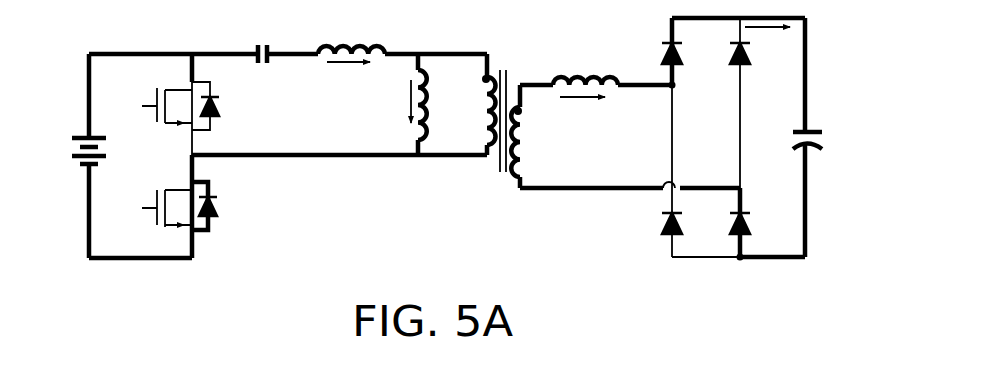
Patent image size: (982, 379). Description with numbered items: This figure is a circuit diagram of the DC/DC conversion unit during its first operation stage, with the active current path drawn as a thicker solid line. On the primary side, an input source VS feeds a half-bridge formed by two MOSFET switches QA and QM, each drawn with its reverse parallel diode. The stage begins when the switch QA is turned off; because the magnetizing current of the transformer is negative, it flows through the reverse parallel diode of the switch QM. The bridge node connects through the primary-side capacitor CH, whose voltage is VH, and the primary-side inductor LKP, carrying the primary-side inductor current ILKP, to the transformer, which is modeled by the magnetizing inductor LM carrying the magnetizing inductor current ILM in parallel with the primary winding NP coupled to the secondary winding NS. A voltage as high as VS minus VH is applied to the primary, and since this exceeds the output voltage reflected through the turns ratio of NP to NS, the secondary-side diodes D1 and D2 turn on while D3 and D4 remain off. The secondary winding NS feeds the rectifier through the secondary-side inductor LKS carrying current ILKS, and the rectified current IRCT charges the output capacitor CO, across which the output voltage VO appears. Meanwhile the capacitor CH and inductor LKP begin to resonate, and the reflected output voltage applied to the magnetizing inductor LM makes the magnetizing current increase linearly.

The input voltage VS is at (72, 152).
The switch QA is at (168, 100).
The switch QM is at (167, 200).
The primary-side capacitor CH is at (260, 35).
The voltage across primary-side capacitor VH is at (258, 81).
The primary-side inductor LKP is at (351, 30).
The primary-side inductor current ILKP is at (352, 80).
The magnetizing inductor current ILM is at (389, 105).
The magnetizing inductor LM is at (440, 105).
The primary winding NP is at (475, 110).
The secondary winding NS is at (534, 142).
The secondary-side inductor LKS is at (585, 65).
The secondary-side inductor current ILKS is at (584, 113).
The secondary-side diode D1 is at (655, 50).
The secondary-side diode D2 is at (725, 223).
The secondary-side diode D3 is at (655, 223).
The secondary-side diode D4 is at (725, 51).
The rectified current IRCT is at (770, 45).
The output capacitor CO is at (789, 133).
The output voltage VO is at (839, 134).